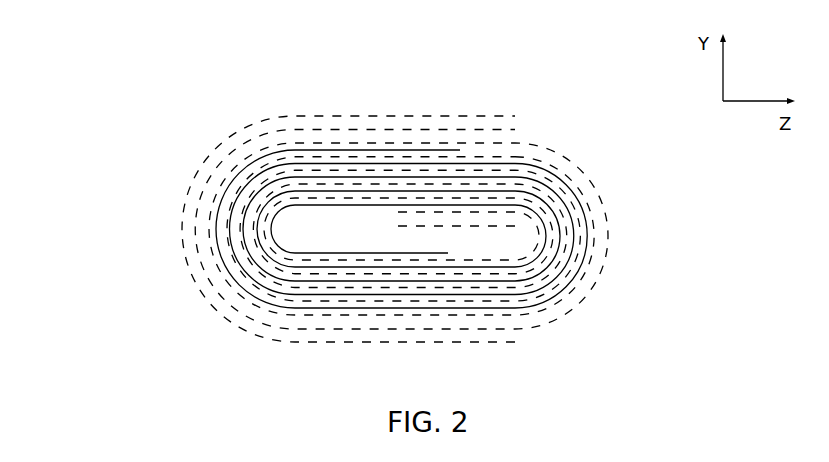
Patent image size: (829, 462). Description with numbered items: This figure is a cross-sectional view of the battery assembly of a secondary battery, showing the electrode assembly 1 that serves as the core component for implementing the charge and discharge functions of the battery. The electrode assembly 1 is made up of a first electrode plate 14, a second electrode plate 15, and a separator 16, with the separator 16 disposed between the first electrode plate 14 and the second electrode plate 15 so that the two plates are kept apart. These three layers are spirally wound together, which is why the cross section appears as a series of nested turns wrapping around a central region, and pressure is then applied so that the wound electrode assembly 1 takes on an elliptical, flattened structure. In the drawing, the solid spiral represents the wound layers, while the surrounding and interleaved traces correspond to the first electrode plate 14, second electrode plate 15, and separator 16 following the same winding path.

The electrode assembly 1 is at (125, 90).
The first electrode plate 14 is at (369, 150).
The second electrode plate 15 is at (247, 180).
The separator 16 is at (443, 116).